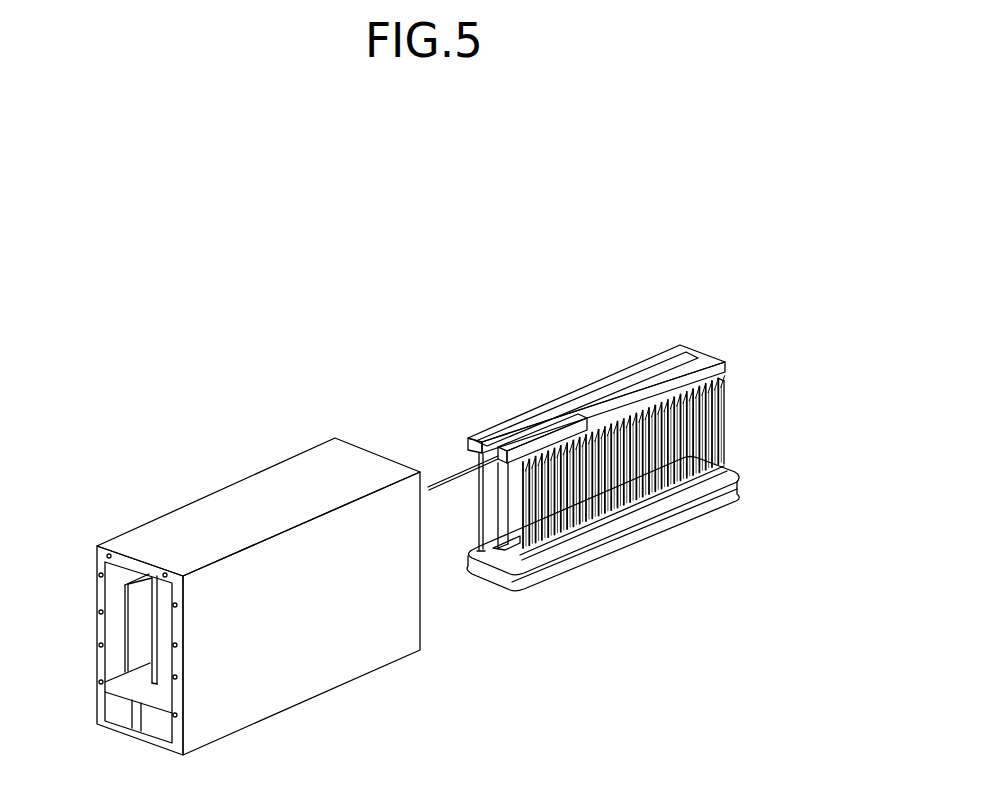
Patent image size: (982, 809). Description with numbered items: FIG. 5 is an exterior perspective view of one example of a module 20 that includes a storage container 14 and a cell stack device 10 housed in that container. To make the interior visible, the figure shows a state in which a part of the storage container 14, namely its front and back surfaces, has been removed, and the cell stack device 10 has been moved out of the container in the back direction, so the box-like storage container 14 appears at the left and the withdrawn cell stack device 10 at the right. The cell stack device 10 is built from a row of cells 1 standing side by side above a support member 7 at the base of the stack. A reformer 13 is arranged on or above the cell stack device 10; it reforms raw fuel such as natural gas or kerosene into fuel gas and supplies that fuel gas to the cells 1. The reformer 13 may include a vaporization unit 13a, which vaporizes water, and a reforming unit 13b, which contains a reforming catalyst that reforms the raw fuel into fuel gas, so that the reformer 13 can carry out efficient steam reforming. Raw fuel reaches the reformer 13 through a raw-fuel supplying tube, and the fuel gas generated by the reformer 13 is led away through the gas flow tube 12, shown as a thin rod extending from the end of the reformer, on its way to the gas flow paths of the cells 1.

The cell 1 is at (728, 398).
The base plate 7 is at (532, 553).
The cell stack device 10 is at (632, 336).
The gas flow tube 12 is at (472, 458).
The reformer 13 is at (481, 458).
The vaporization unit 13a is at (548, 437).
The reforming unit 13b is at (693, 355).
The storage container 14 is at (292, 473).
The module 20 is at (198, 221).